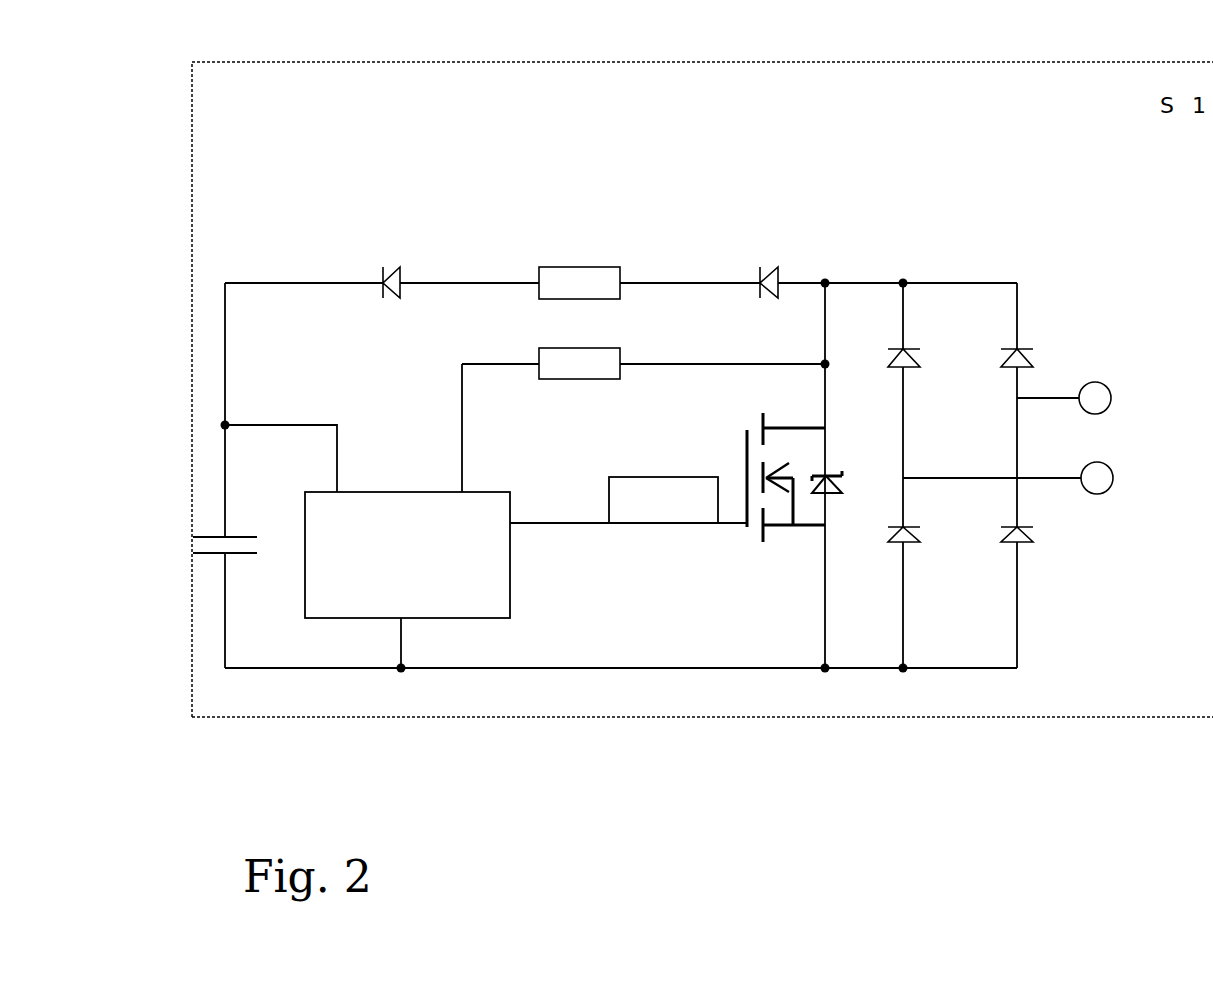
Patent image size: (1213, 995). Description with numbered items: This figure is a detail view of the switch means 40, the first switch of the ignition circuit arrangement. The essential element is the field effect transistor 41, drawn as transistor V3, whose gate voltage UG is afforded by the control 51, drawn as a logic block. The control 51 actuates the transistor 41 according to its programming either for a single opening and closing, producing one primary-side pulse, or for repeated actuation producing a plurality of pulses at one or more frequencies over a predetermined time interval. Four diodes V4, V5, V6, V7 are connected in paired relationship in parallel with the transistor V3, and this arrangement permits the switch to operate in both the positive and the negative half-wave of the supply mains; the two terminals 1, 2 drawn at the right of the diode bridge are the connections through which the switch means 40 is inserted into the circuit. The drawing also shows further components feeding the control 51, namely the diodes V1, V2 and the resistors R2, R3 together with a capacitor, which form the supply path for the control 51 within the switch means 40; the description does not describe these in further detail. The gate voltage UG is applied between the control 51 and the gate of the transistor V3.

The switch means 40 is at (765, 62).
The field effect transistor 41 is at (758, 508).
The control 51 is at (463, 603).
The terminal 1 is at (1110, 389).
The terminal 2 is at (1112, 477).
The diode V1 is at (396, 265).
The diode V2 is at (776, 265).
The field effect transistor V3 is at (794, 494).
The diode V4 is at (920, 340).
The diode V5 is at (920, 553).
The diode V6 is at (1033, 340).
The diode V7 is at (1033, 553).
The resistor R2 is at (579, 265).
The resistor R3 is at (579, 383).
The gate voltage UG is at (663, 500).